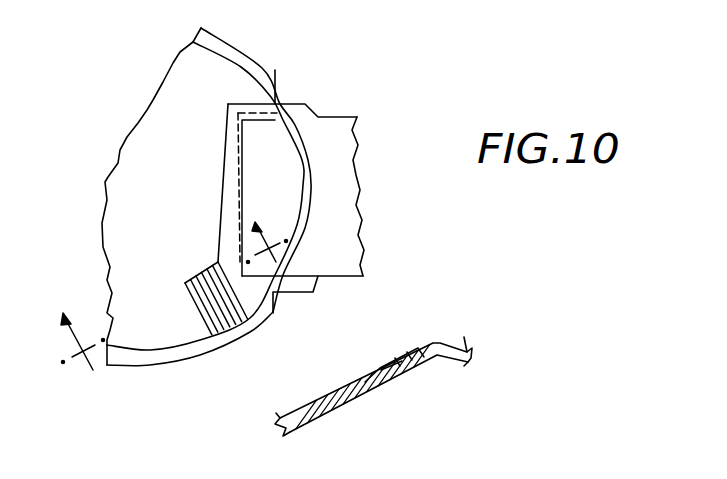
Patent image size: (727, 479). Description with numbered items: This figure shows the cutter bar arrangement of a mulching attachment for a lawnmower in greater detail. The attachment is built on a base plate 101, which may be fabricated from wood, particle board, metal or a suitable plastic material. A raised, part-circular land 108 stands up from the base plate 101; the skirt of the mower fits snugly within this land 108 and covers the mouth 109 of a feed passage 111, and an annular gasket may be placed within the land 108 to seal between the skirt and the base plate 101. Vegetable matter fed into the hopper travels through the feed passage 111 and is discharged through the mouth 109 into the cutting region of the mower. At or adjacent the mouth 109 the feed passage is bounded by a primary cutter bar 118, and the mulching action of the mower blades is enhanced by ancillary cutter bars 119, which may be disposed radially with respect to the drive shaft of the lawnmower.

The base plate 101 is at (157, 115).
The raised, part-circular land 108 is at (272, 72).
The mouth of feed passage 109 is at (277, 178).
The feed passage 111 is at (330, 180).
The primary cutter bar 118 is at (232, 212).
The ancillary cutter bars 119 is at (203, 305).